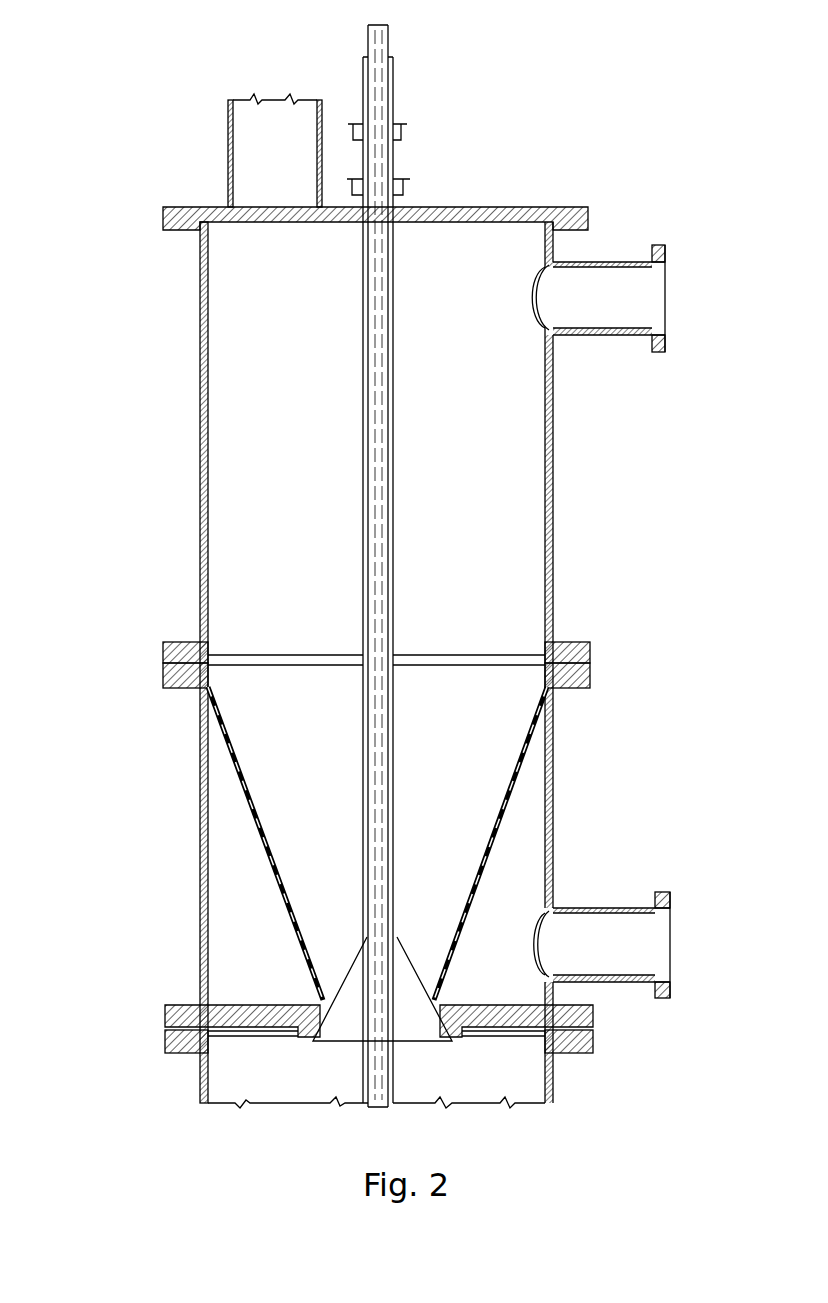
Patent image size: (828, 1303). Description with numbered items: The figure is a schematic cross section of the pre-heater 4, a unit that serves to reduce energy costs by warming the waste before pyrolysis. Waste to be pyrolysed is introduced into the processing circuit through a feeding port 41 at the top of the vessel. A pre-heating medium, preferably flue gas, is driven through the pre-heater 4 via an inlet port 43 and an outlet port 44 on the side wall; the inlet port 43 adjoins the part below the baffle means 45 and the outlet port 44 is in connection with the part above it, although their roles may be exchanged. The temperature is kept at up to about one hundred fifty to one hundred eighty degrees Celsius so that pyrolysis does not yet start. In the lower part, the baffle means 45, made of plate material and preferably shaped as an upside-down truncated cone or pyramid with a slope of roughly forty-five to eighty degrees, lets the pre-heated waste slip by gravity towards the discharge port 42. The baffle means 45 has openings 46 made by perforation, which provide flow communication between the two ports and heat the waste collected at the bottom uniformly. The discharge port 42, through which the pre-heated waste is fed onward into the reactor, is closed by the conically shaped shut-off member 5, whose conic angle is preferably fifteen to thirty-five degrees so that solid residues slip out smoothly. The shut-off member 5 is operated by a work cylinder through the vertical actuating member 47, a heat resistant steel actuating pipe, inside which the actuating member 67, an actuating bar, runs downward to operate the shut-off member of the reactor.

The pre-heater 4 is at (140, 410).
The feeding port 41 is at (253, 160).
The discharge port 42 is at (333, 966).
The inlet port 43 is at (600, 908).
The outlet port 44 is at (624, 344).
The baffle means 45 is at (497, 825).
The openings 46 is at (533, 725).
The vertical actuating member 47 is at (392, 93).
The shut-off member 5 is at (360, 942).
The actuating member 67 is at (390, 40).